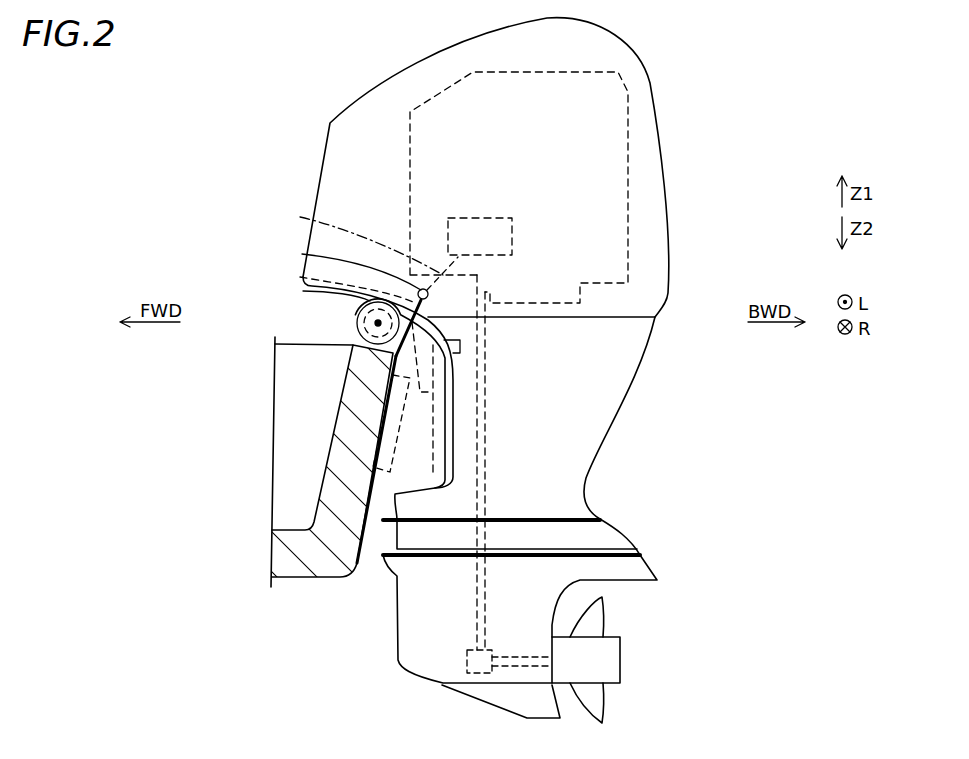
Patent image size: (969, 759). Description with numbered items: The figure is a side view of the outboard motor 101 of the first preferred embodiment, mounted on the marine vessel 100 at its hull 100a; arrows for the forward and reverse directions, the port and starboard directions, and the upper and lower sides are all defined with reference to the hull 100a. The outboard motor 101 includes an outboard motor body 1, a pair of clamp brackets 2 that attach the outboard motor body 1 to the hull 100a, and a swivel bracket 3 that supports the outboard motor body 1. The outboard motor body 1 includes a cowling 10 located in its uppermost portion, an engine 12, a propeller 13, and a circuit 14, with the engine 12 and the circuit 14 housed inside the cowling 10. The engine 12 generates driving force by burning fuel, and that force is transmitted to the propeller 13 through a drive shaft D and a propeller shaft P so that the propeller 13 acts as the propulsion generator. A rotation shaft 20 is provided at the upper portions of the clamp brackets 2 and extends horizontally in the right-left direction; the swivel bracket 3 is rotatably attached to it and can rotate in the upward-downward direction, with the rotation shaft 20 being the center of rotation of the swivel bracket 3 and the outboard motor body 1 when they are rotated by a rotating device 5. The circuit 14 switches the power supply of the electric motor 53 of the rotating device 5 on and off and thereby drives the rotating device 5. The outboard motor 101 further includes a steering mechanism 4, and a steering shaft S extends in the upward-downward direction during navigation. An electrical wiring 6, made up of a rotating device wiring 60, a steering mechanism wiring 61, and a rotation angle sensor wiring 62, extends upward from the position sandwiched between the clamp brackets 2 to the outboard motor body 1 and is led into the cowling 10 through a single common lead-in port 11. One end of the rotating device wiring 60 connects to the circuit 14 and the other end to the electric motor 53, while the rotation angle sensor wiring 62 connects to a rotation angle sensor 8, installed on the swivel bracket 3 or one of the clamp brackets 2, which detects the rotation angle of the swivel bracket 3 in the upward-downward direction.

The marine vessel 100 is at (236, 96).
The hull 100a is at (275, 552).
The outboard motor 101 is at (678, 92).
The outboard motor body 1 is at (669, 125).
The cowling 10 is at (658, 192).
The engine 12 is at (630, 236).
The circuit 14 is at (512, 248).
The electrical wiring 6 is at (444, 259).
The rotating device wiring 60 is at (300, 217).
The lead-in port 11 is at (302, 254).
The steering mechanism wiring 61 is at (300, 277).
The rotation shaft 20 is at (335, 292).
The steering mechanism 4 is at (357, 316).
The swivel bracket 3 is at (458, 341).
The rotation angle sensor 8 is at (460, 380).
The steering shaft S is at (460, 452).
The rotation angle sensor wiring 62 is at (387, 351).
The electric motor 53 is at (370, 393).
The rotating device 5 is at (368, 435).
The clamp brackets 2 is at (377, 490).
The propeller 13 is at (600, 613).
The drive shaft D is at (473, 610).
The propeller shaft P is at (505, 645).